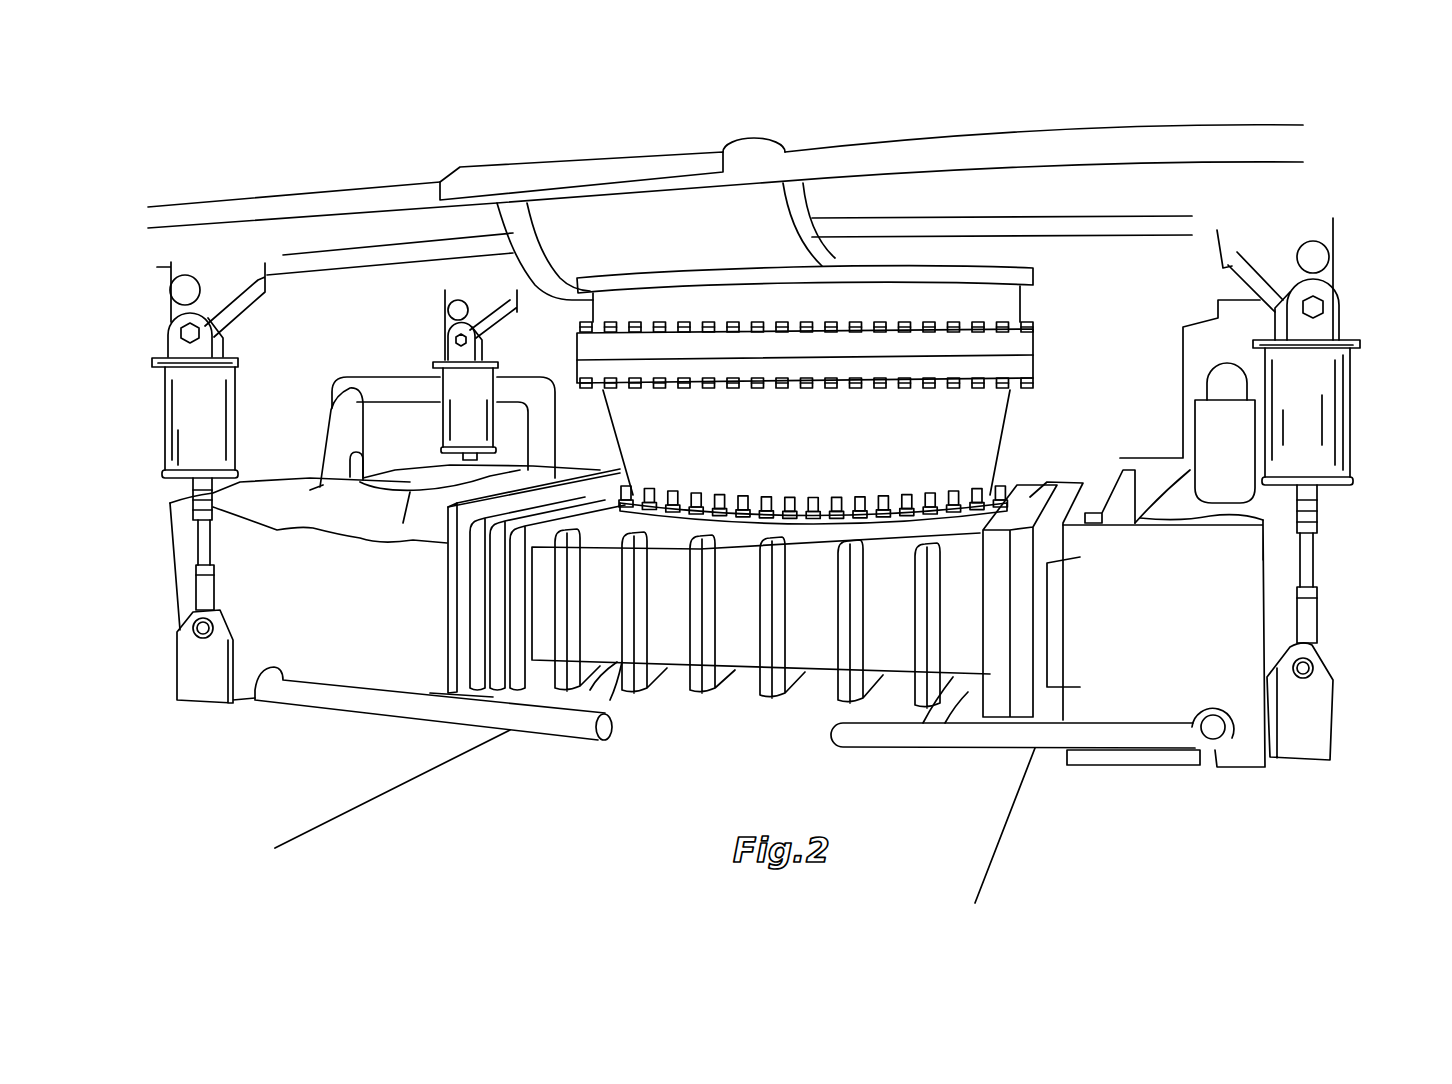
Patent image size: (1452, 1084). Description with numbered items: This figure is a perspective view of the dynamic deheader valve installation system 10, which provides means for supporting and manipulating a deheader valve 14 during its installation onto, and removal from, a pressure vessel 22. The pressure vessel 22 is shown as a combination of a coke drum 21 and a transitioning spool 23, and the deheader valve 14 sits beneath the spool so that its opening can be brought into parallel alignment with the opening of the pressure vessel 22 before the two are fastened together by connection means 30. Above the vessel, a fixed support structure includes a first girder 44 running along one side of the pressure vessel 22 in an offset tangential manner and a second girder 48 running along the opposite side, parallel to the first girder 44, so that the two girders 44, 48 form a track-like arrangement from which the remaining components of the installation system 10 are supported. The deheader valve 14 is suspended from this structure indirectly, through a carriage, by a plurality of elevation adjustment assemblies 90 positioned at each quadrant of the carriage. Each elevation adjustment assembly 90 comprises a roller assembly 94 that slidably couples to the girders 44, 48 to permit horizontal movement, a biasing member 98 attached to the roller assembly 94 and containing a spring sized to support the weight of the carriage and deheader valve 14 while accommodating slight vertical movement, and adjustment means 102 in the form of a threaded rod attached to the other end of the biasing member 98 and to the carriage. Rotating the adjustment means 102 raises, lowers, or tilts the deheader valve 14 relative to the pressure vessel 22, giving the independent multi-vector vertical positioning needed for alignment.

The dynamic deheader valve installation system 10 is at (296, 295).
The deheader valve 14 is at (741, 648).
The coke drum 21 is at (816, 317).
The pressure vessel 22 is at (1036, 406).
The transitioning spool 23 is at (820, 459).
The connection means 30 is at (1000, 503).
The first girder 44 is at (1130, 222).
The second girder 48 is at (347, 253).
The elevation adjustment assembly 90 is at (126, 351).
The roller assembly 94 is at (172, 290).
The biasing member 98 is at (219, 409).
The adjustment means 102 is at (200, 536).